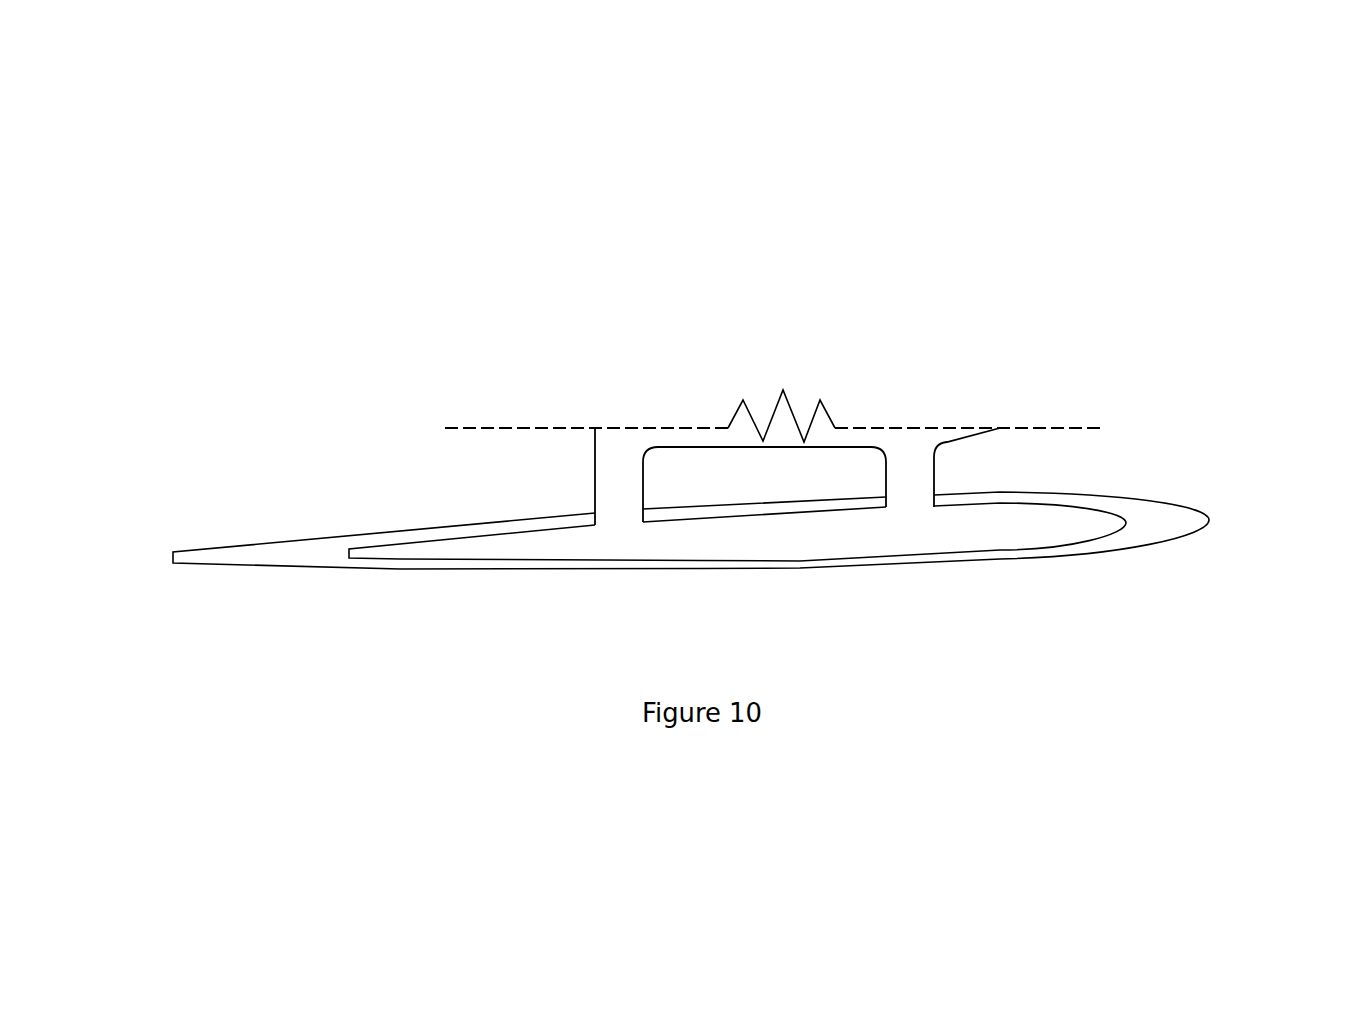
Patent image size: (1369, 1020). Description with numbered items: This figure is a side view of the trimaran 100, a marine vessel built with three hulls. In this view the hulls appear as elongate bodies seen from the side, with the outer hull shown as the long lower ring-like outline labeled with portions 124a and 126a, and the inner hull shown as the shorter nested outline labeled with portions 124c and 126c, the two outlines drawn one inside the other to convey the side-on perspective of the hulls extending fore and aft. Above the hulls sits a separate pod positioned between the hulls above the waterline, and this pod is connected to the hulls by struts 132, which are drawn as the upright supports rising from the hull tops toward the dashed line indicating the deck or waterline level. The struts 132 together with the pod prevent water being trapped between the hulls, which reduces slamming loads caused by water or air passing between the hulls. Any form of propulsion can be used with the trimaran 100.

The trimaran 100 is at (1187, 211).
The outer hull portion 124a is at (1217, 502).
The inner hull portion 124c is at (1105, 530).
The outer ring member 126a is at (217, 557).
The inner ring member 126c is at (392, 556).
The struts 132 is at (615, 469).